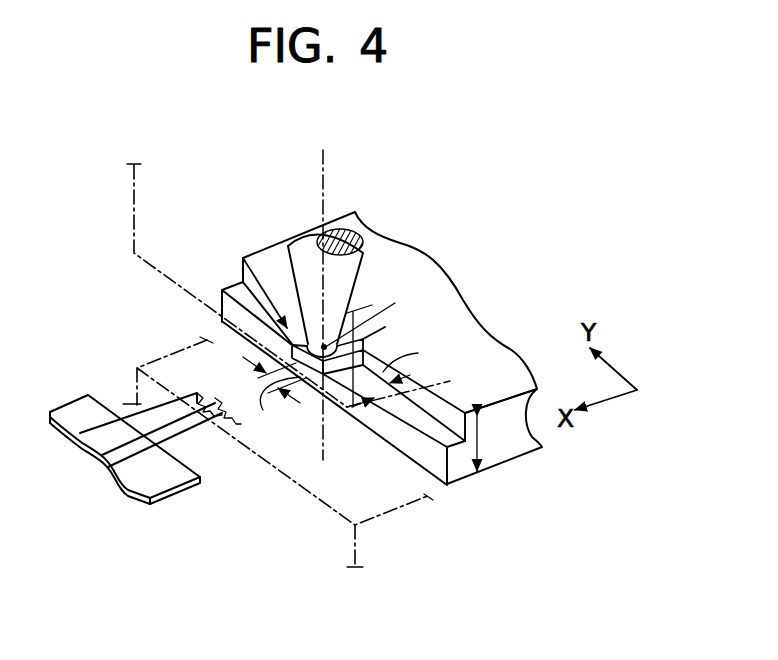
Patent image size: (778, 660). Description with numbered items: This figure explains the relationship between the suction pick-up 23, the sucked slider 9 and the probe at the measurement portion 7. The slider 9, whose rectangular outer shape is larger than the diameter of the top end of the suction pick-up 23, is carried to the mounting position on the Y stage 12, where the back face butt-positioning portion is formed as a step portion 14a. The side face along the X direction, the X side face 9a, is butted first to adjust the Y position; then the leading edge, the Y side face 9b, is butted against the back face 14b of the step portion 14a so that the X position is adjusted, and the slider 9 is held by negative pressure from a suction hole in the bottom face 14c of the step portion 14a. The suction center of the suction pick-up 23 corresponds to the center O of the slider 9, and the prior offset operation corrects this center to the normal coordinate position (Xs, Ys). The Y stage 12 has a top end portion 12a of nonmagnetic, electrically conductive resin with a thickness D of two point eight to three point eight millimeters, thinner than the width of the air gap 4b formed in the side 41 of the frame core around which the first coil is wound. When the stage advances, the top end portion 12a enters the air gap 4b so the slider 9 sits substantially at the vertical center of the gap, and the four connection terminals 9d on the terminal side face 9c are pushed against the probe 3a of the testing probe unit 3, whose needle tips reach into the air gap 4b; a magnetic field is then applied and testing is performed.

The testing probe unit 3 is at (140, 478).
The probe 3a is at (214, 440).
The air gap 4b is at (172, 368).
The measurement portion 7 is at (208, 386).
The slider 9 is at (243, 258).
The X side face 9a is at (300, 336).
The Y side face 9b is at (365, 350).
The terminal side face 9c is at (222, 294).
The connection terminals 9d is at (323, 374).
The Y stage 12 is at (425, 268).
The top end portion 12a is at (467, 467).
The step portion 14a is at (430, 420).
The back face 14b is at (505, 398).
The bottom face 14c is at (433, 428).
The suction pick-up 23 is at (352, 267).
The side 41 is at (152, 212).
The center of the slider O is at (367, 319).
The X coordinate of normal coordinate position Xs is at (398, 371).
The Y coordinate of normal coordinate position Ys is at (274, 396).
The thickness D is at (561, 457).